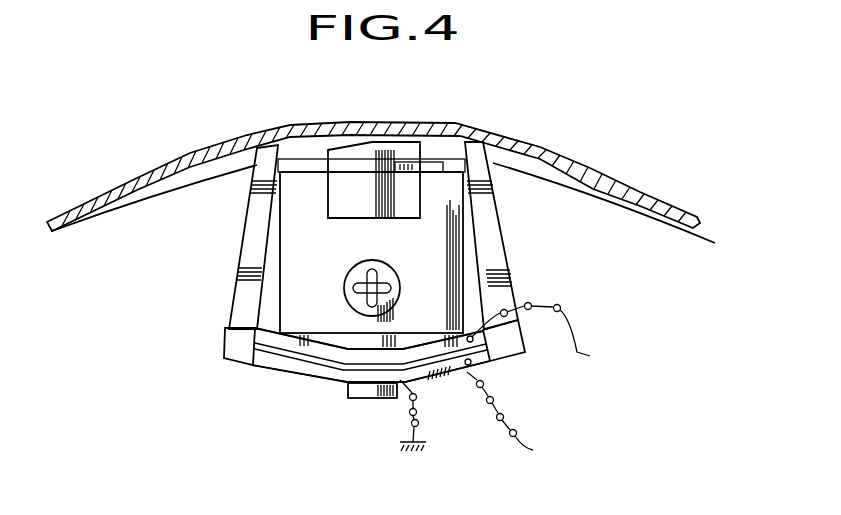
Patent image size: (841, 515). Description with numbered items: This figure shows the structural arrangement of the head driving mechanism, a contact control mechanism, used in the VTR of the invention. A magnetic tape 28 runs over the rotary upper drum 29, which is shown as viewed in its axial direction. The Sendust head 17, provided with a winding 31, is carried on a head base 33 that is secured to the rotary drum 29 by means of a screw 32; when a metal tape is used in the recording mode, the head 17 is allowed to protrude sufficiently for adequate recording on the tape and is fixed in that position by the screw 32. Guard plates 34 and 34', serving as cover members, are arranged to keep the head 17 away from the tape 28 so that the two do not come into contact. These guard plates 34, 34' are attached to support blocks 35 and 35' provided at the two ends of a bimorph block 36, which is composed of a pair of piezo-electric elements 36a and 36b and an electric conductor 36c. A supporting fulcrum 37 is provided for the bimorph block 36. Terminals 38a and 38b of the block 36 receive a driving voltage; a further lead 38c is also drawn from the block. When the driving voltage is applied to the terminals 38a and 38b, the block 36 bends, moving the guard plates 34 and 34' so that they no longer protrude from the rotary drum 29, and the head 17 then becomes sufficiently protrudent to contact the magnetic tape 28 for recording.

The Sendust head 17 is at (393, 165).
The magnetic tape 28 is at (593, 170).
The rotary upper drum 29 is at (658, 232).
The winding 31 is at (442, 162).
The screw 32 is at (385, 272).
The head base 33 is at (302, 186).
The guard plate 34 is at (517, 235).
The guard plate 34' is at (223, 237).
The support block 35 is at (524, 363).
The support block 35' is at (227, 378).
The bimorph block 36 is at (358, 463).
The piezo-electric element 36a is at (323, 352).
The piezo-electric element 36b is at (275, 367).
The electric conductor 36c is at (307, 362).
The supporting fulcrum 37 is at (362, 400).
The terminal 38a is at (541, 336).
The terminal 38b is at (507, 437).
The ground lead wire 38c is at (420, 413).